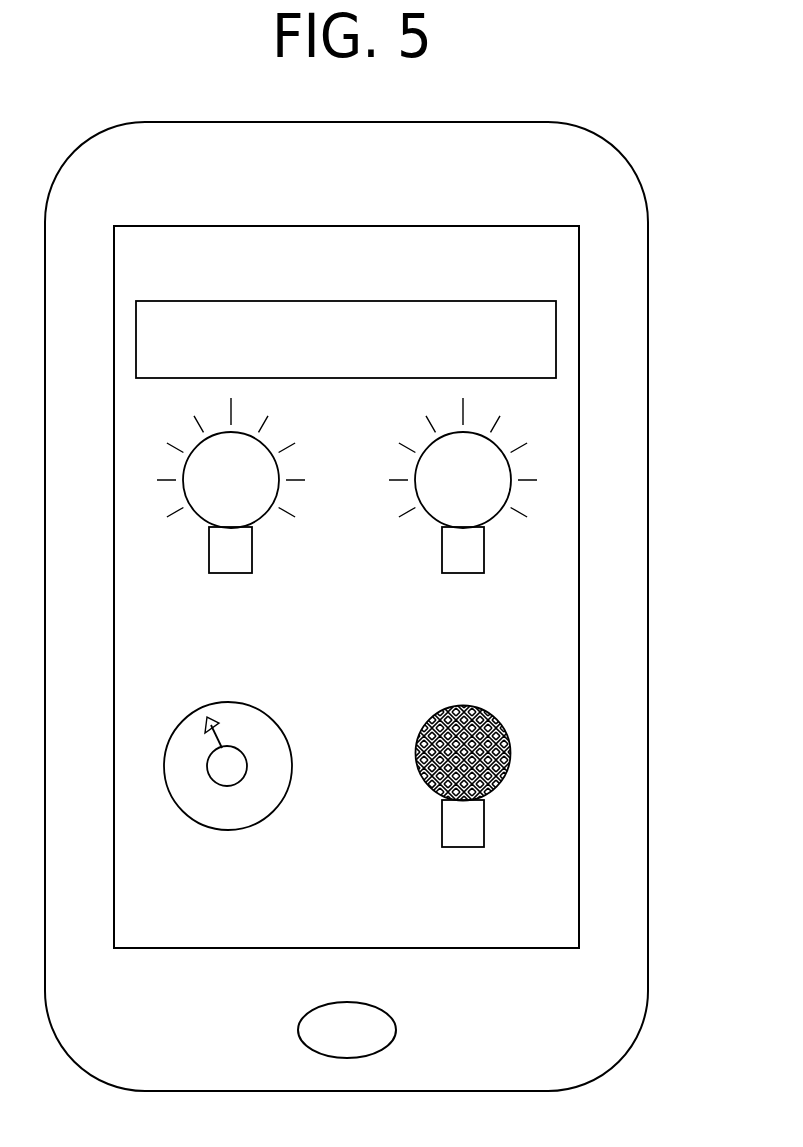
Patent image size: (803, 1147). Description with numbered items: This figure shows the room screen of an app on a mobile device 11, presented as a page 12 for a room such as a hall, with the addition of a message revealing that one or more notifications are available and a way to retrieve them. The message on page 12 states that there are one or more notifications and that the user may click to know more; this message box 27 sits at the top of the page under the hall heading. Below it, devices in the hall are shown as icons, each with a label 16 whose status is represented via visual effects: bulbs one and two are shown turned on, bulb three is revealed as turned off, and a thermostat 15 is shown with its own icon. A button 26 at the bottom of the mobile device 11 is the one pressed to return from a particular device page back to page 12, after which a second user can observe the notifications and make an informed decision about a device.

The mobile device 11 is at (648, 268).
The page 12 is at (470, 226).
The thermostat 15 is at (282, 724).
The label 16 is at (273, 603).
The button 26 is at (393, 1018).
The notification message box 27 is at (516, 301).